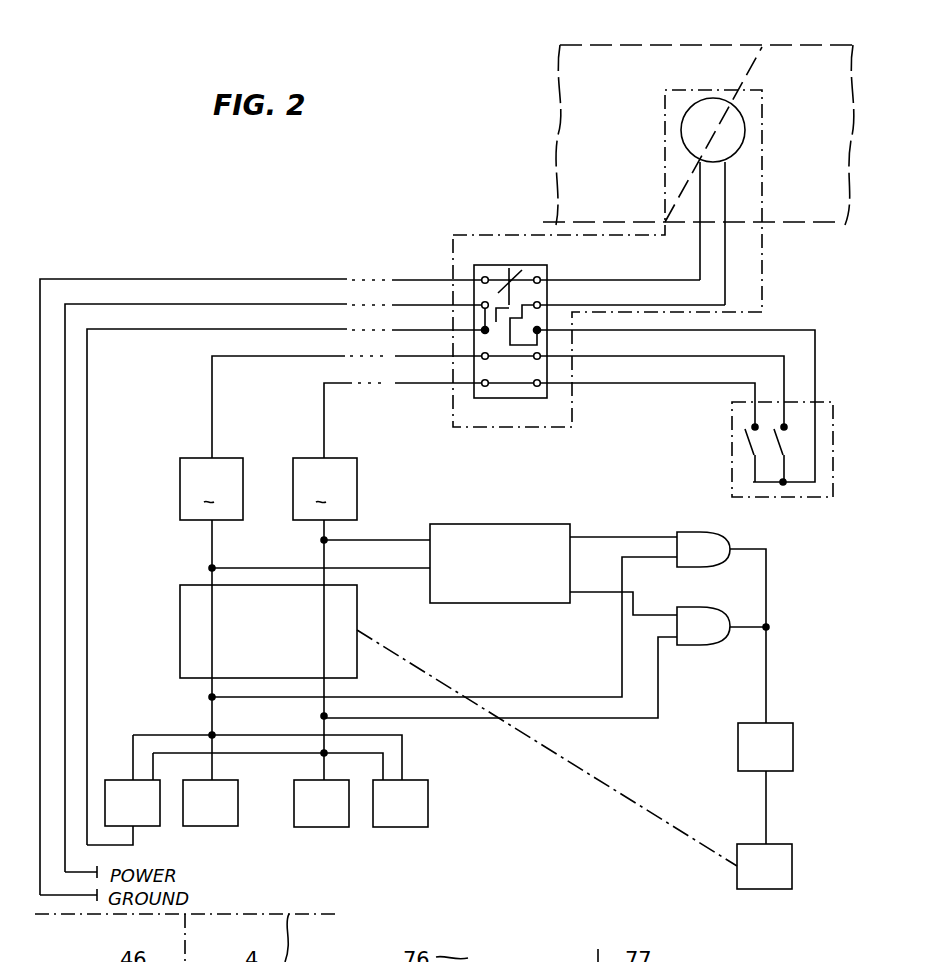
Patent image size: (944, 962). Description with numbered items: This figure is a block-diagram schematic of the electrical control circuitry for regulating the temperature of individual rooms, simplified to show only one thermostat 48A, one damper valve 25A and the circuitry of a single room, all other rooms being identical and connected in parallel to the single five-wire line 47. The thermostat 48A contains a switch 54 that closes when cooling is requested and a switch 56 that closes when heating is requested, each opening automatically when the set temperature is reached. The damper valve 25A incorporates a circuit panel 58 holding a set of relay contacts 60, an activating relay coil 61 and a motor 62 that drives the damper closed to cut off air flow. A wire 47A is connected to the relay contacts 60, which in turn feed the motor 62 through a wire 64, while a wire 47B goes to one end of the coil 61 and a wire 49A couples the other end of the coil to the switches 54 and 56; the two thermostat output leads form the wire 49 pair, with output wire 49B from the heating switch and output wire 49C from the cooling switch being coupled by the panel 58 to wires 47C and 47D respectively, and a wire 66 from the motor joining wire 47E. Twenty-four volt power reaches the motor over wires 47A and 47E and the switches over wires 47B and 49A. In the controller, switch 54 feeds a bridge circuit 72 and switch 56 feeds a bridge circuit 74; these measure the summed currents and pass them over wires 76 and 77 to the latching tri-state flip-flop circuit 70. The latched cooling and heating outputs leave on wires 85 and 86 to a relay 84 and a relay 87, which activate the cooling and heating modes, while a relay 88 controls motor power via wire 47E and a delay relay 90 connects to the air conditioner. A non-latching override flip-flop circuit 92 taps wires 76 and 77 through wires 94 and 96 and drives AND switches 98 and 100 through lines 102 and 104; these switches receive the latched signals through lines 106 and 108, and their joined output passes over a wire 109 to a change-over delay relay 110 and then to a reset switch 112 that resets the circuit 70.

The damper valve 25A is at (553, 152).
The motor 62 is at (738, 110).
The wire 64 is at (700, 248).
The wire 66 is at (725, 190).
The circuit panel 58 is at (545, 423).
The relay contacts 60 is at (507, 278).
The activating relay coil 61 is at (502, 333).
The multi-wire line 47 is at (343, 320).
The wire 47A is at (163, 268).
The wire 47B is at (233, 303).
The wire 47C is at (350, 384).
The wire 47D is at (270, 359).
The wire 47E is at (150, 333).
The switch wire 49 is at (800, 372).
The wire 49A is at (794, 331).
The output wire 49B is at (612, 385).
The output wire 49C is at (716, 358).
The thermostat 48A is at (730, 471).
The switch 54 is at (782, 446).
The switch 56 is at (745, 441).
The circuit 72 is at (211, 489).
The circuit 74 is at (325, 489).
The wire 76 is at (211, 549).
The wire 77 is at (323, 552).
The latching tri-state flip-flop circuit 70 is at (177, 648).
The non-latching flip-flop circuit 92 is at (522, 604).
The wire 94 is at (373, 572).
The wire 96 is at (378, 540).
The AND switch 98 is at (703, 549).
The AND switch 100 is at (703, 626).
The line 102 is at (640, 520).
The line 104 is at (605, 593).
The line 106 is at (531, 697).
The line 108 is at (568, 718).
The wire 109 is at (766, 682).
The change over delay relay 110 is at (765, 783).
The reset switch 112 is at (764, 866).
The wire 85 is at (211, 714).
The wire 86 is at (320, 703).
The relay 88 is at (132, 803).
The relay 84 is at (210, 803).
The relay 87 is at (321, 803).
The delay relay 90 is at (400, 803).